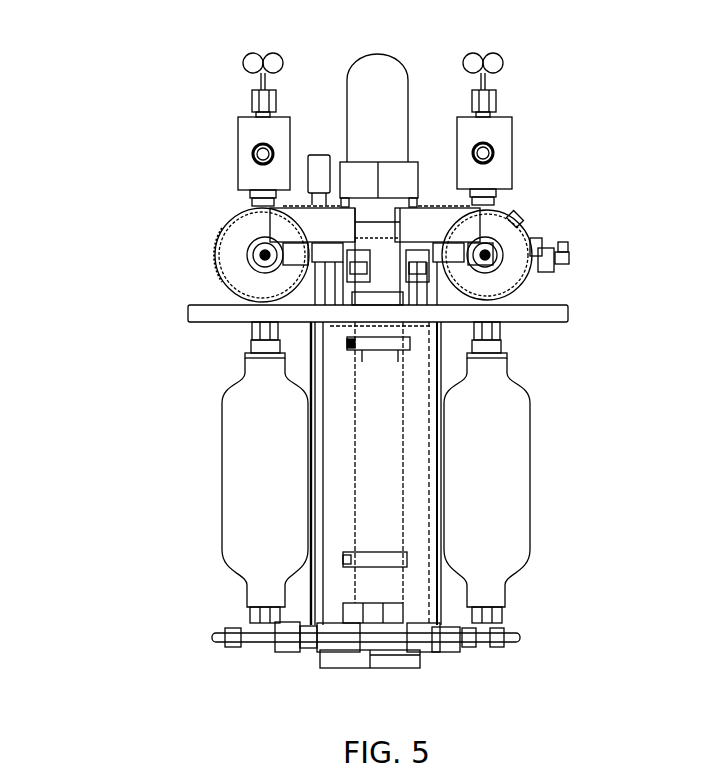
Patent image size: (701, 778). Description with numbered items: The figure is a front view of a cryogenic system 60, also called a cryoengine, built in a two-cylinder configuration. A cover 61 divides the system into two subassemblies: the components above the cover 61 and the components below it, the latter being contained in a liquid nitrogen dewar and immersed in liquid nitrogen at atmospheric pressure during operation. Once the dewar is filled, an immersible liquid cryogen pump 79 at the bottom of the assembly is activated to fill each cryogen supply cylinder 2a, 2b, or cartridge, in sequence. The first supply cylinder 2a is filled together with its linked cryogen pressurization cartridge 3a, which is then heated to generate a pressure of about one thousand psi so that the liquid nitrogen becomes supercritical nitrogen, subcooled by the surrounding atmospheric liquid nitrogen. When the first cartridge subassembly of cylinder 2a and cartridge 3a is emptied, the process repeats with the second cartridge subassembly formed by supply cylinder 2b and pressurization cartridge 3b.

The cryogenic system 60 is at (137, 115).
The cryogen pressurization cartridge 3a is at (251, 238).
The cryogen pressurization cartridge 3b is at (502, 238).
The cover 61 is at (570, 321).
The cryogen supply cylinder 2a is at (218, 484).
The cryogen supply cylinder 2b is at (534, 483).
The immersible liquid cryogen pump 79 is at (383, 668).